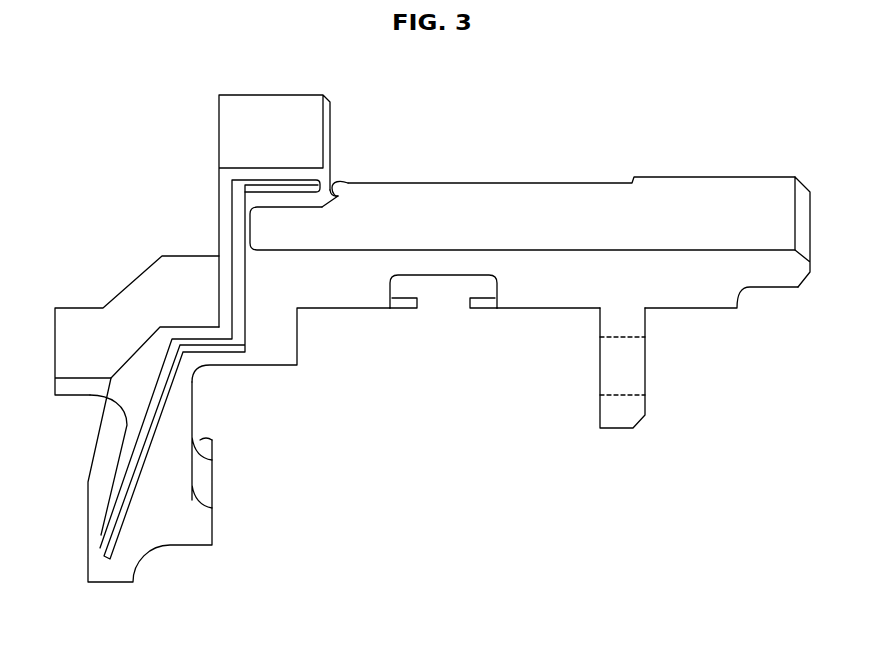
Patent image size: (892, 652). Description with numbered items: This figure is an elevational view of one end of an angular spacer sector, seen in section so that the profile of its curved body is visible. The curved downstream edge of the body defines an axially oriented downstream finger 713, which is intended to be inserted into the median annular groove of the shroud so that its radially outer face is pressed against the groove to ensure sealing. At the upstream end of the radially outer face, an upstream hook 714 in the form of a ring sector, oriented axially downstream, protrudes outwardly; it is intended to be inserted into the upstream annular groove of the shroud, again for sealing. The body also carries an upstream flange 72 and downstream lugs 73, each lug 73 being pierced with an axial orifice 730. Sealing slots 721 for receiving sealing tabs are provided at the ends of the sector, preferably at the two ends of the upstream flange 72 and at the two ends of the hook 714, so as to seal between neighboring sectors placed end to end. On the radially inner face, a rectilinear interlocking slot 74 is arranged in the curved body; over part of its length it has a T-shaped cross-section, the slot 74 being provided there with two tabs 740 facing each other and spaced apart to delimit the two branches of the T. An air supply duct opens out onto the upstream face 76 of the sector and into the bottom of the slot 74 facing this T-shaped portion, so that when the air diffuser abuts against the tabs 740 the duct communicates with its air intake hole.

The upstream face 76 is at (213, 216).
The sealing slot 721 is at (238, 216).
The upstream hook 714 is at (340, 188).
The downstream finger 713 is at (772, 276).
The interlocking slot 74 is at (446, 290).
The tabs 740 is at (407, 303).
The downstream lug 73 is at (594, 406).
The axial orifice 730 is at (623, 368).
The upstream flange 72 is at (178, 484).